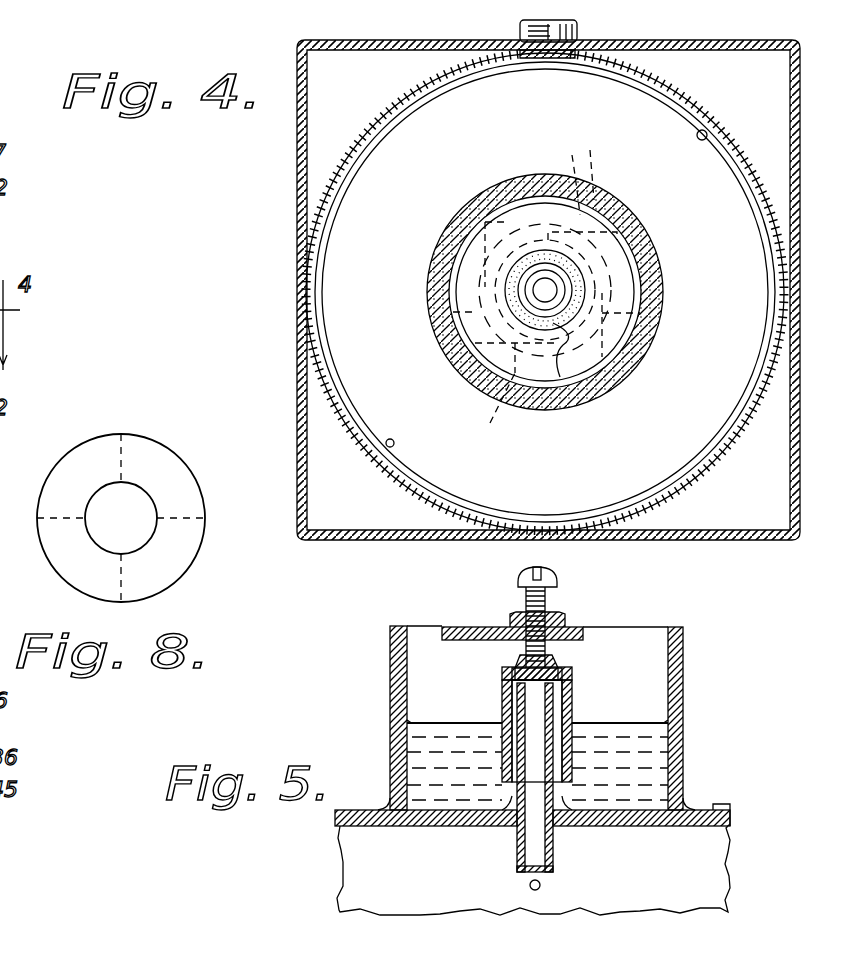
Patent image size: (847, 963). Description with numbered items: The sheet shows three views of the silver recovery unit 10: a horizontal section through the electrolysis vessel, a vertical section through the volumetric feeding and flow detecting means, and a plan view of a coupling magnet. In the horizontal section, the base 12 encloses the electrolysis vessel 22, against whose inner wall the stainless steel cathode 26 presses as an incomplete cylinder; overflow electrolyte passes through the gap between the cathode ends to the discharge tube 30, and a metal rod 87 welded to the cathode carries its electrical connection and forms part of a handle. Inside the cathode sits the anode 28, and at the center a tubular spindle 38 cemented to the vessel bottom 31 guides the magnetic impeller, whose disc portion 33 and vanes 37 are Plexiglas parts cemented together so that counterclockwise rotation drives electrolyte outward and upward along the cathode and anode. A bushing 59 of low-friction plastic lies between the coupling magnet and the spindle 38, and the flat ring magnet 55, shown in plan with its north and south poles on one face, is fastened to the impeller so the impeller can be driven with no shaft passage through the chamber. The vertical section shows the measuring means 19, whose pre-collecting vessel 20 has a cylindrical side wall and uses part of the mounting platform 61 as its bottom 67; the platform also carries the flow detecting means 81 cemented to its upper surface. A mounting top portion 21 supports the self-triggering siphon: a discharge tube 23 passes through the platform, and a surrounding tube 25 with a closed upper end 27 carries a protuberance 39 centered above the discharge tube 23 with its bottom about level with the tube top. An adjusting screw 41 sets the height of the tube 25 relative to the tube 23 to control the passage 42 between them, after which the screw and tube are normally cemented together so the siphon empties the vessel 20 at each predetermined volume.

In FIG. 4, the silver recovery unit 10 is at (283, 200).
In FIG. 4, the base 12 is at (800, 103).
In FIG. 4, the electrolysis vessel 22 is at (421, 86).
In FIG. 4, the cathode 26 is at (470, 80).
In FIG. 4, the anode 28 is at (477, 193).
In FIG. 4, the discharge tube 30 is at (515, 25).
In FIG. 4, the bottom of vessel 31 is at (672, 452).
In FIG. 4, the disc portion 33 is at (473, 312).
In FIG. 4, the vanes 37 is at (694, 318).
In FIG. 4, the spindle 38 is at (533, 287).
In FIG. 4, the magnet 55 is at (558, 378).
In FIG. 8, the magnet 55 is at (178, 468).
In FIG. 4, the bushing 59 is at (570, 282).
In FIG. 4, the metal rod 87 is at (392, 440).
In FIG. 5, the measuring means 19 is at (690, 743).
In FIG. 5, the pre-collecting vessel 20 is at (683, 692).
In FIG. 5, the mounting top portion 21 is at (477, 626).
In FIG. 5, the discharge tube 23 is at (517, 852).
In FIG. 5, the tube 25 is at (573, 707).
In FIG. 5, the closed upper end 27 is at (563, 665).
In FIG. 5, the protuberance 39 is at (507, 692).
In FIG. 5, the adjusting screw 41 is at (547, 600).
In FIG. 5, the passage 42 is at (570, 690).
In FIG. 5, the mounting platform 61 is at (720, 820).
In FIG. 5, the bottom 67 is at (650, 803).
In FIG. 5, the flow detecting means 81 is at (532, 891).